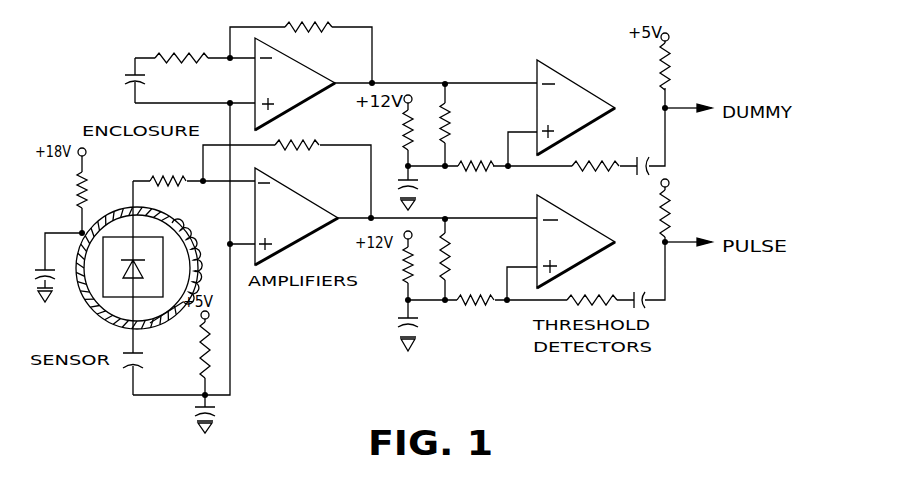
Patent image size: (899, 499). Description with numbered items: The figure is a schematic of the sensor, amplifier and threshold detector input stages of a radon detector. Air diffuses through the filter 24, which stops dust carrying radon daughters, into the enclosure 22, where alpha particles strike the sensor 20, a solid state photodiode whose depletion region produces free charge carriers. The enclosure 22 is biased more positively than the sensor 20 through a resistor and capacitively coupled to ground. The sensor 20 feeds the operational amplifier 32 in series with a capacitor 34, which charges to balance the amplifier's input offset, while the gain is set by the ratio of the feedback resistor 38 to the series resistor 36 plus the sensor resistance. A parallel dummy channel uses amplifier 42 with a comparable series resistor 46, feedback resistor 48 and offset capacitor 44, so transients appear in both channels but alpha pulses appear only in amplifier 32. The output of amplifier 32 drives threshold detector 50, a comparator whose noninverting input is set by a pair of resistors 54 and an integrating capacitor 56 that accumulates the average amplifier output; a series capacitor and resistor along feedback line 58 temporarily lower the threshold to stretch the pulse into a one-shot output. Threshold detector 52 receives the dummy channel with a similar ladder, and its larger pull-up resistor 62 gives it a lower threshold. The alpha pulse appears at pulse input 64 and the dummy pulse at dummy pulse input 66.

The sensor 20 is at (117, 286).
The enclosure 22 is at (178, 308).
The filter 24 is at (192, 235).
The operational amplifier 32 is at (306, 233).
The capacitor 34 is at (125, 367).
The series resistor 36 is at (163, 178).
The feedback resistor 38 is at (302, 140).
The amplifier 42 is at (293, 62).
The capacitor 44 is at (125, 73).
The series resistor 46 is at (175, 54).
The feedback resistor 48 is at (330, 33).
The threshold detector 50 is at (579, 221).
The threshold detector 52 is at (574, 84).
The resistors 54 is at (452, 263).
The integrating capacitor 56 is at (398, 317).
The feedback line 58 is at (619, 296).
The pull-up resistor 62 is at (407, 137).
The pulse input 64 is at (685, 242).
The dummy pulse input 66 is at (683, 106).